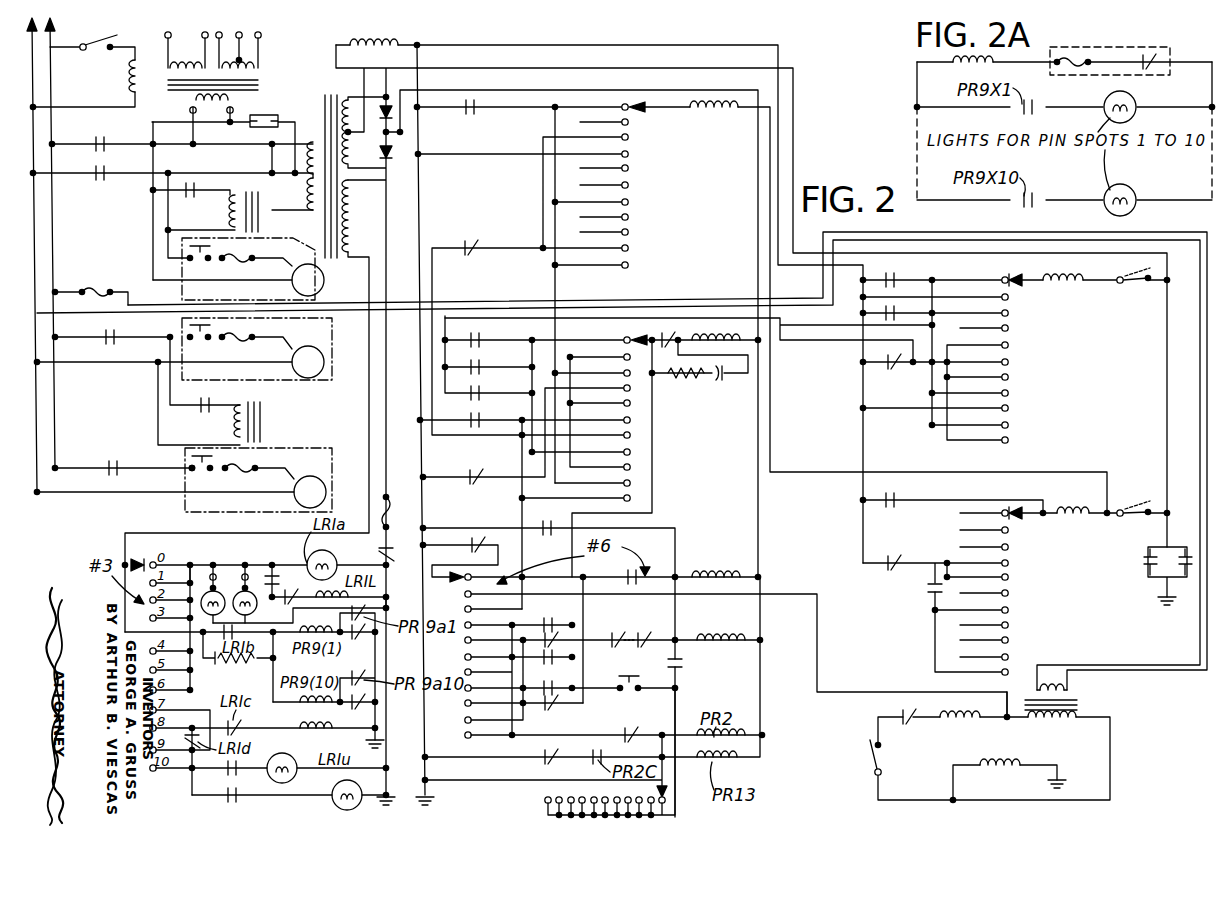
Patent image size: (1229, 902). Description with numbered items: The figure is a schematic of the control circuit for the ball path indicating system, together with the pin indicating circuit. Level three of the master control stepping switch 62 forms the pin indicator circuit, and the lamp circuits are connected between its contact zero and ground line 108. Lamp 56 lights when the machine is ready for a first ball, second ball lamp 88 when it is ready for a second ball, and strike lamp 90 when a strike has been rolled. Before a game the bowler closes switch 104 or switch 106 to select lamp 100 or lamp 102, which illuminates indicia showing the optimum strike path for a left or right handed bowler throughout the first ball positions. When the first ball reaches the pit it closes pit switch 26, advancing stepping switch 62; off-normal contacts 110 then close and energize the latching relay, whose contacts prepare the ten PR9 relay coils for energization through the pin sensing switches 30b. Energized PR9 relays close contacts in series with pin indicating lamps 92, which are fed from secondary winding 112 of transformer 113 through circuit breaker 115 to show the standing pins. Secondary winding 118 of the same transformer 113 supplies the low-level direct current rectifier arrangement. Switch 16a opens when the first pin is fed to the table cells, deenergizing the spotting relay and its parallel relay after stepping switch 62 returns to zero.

In FIG. 2, the secondary winding 112 is at (200, 65).
In FIG. 2A, the secondary winding 112 is at (952, 64).
In FIG. 2, the secondary winding 118 is at (250, 62).
In FIG. 2, the transformer 113 is at (258, 84).
In FIG. 2, the lamp 100 is at (199, 570).
In FIG. 2, the switch 104 is at (215, 574).
In FIG. 2, the switch 106 is at (243, 574).
In FIG. 2, the lamp 102 is at (271, 572).
In FIG. 2, the off-normal contacts 110 is at (286, 576).
In FIG. 2, the lamp 56 is at (336, 560).
In FIG. 2, the ground line 108 is at (396, 588).
In FIG. 2, the pit switch 26 is at (474, 339).
In FIG. 2, the master control stepping switch 62 is at (733, 352).
In FIG. 2, the second ball lamp 88 is at (290, 761).
In FIG. 2, the strike lamp 90 is at (333, 802).
In FIG. 2, the switch 16a is at (548, 762).
In FIG. 2, the pin sensing switches 30b is at (364, 636).
In FIG. 2A, the circuit breaker 115 is at (1152, 48).
In FIG. 2A, the pin indicating lamp 92 is at (1136, 100).